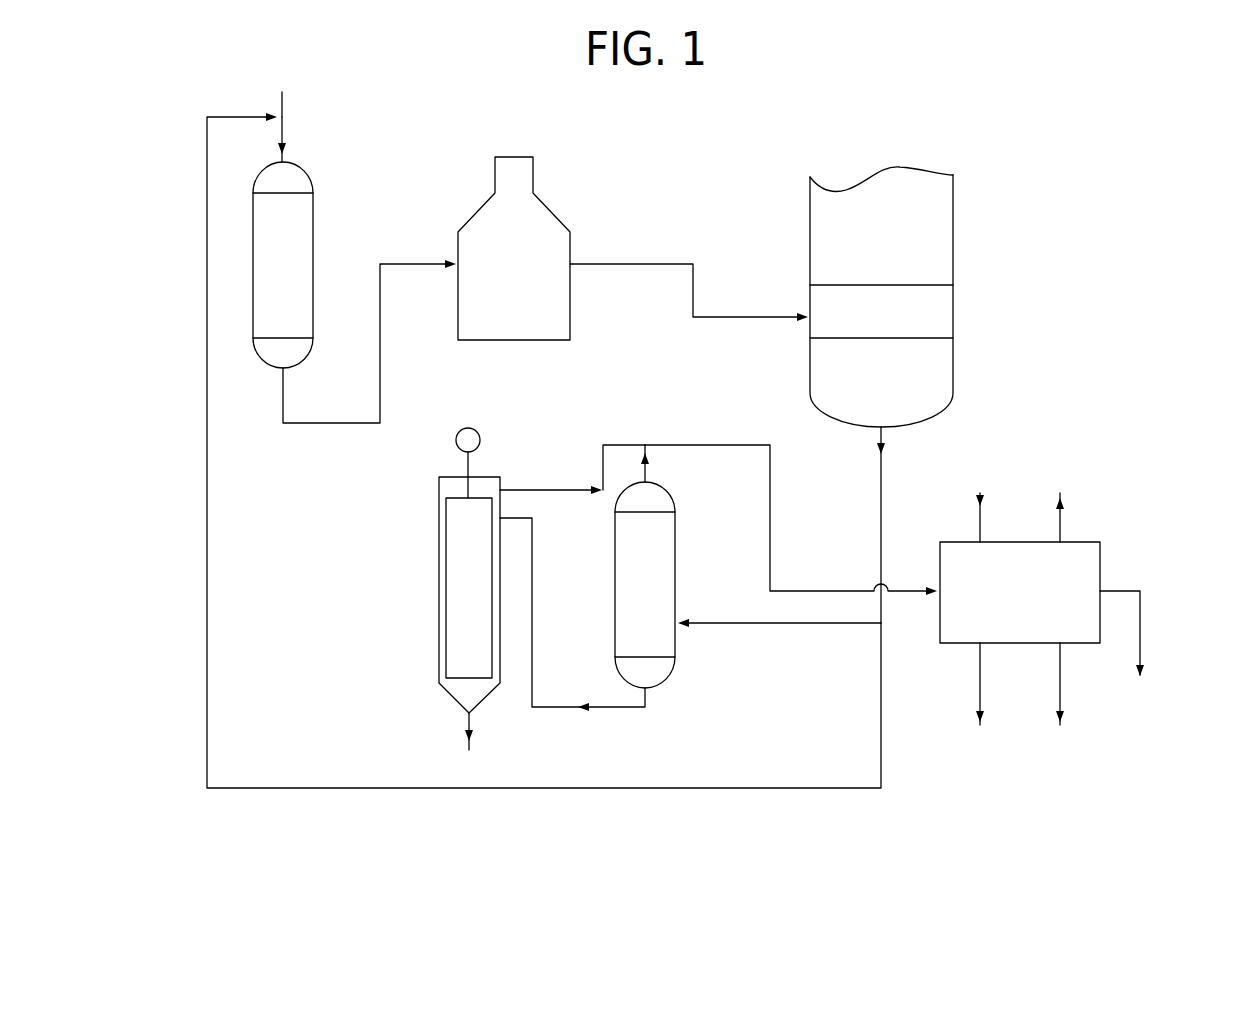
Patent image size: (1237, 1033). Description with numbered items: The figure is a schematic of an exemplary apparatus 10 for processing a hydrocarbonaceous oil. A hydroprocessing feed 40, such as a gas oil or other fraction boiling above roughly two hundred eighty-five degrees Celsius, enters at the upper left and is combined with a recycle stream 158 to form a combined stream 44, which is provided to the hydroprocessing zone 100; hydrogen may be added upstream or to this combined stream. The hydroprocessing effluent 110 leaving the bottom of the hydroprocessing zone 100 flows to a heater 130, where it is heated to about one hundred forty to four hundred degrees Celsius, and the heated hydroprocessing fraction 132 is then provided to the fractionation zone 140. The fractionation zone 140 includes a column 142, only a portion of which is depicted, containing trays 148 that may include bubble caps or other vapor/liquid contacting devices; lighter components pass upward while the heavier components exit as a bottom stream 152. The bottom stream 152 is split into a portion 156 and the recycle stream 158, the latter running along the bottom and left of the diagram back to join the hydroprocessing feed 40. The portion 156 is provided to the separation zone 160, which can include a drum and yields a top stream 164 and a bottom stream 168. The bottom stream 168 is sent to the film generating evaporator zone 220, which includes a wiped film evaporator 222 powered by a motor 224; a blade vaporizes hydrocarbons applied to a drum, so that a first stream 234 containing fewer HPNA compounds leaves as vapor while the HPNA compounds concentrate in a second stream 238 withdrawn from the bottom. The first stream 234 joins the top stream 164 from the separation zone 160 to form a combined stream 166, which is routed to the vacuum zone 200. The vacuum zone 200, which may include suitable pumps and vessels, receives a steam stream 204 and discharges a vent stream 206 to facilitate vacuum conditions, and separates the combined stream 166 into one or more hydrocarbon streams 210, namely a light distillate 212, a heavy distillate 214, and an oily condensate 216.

The apparatus 10 is at (168, 124).
The hydroprocessing feed 40 is at (285, 105).
The combined stream 44 is at (284, 128).
The hydroprocessing zone 100 is at (313, 235).
The hydroprocessing effluent 110 is at (408, 268).
The heater 130 is at (480, 206).
The heated hydroprocessing fraction 132 is at (594, 262).
The fractionation zone 140 is at (955, 218).
The column 142 is at (900, 232).
The trays 148 is at (832, 282).
The bottom stream 152 is at (884, 433).
The portion 156 is at (732, 625).
The recycle stream 158 is at (560, 787).
The separation zone 160 is at (676, 572).
The top stream 164 is at (650, 472).
The combined stream 166 is at (772, 498).
The bottom stream 168 is at (625, 708).
The vacuum zone 200 is at (1040, 598).
The steam stream 204 is at (977, 525).
The vent stream 206 is at (1063, 529).
The hydrocarbon streams 210 is at (1232, 616).
The light distillate 212 is at (977, 683).
The heavy distillate 214 is at (1062, 688).
The oily condensate 216 is at (1124, 588).
The film generating evaporator zone 220 is at (438, 592).
The wiped film evaporator 222 is at (488, 565).
The motor 224 is at (455, 445).
The first stream 234 is at (531, 486).
The second stream 238 is at (462, 721).